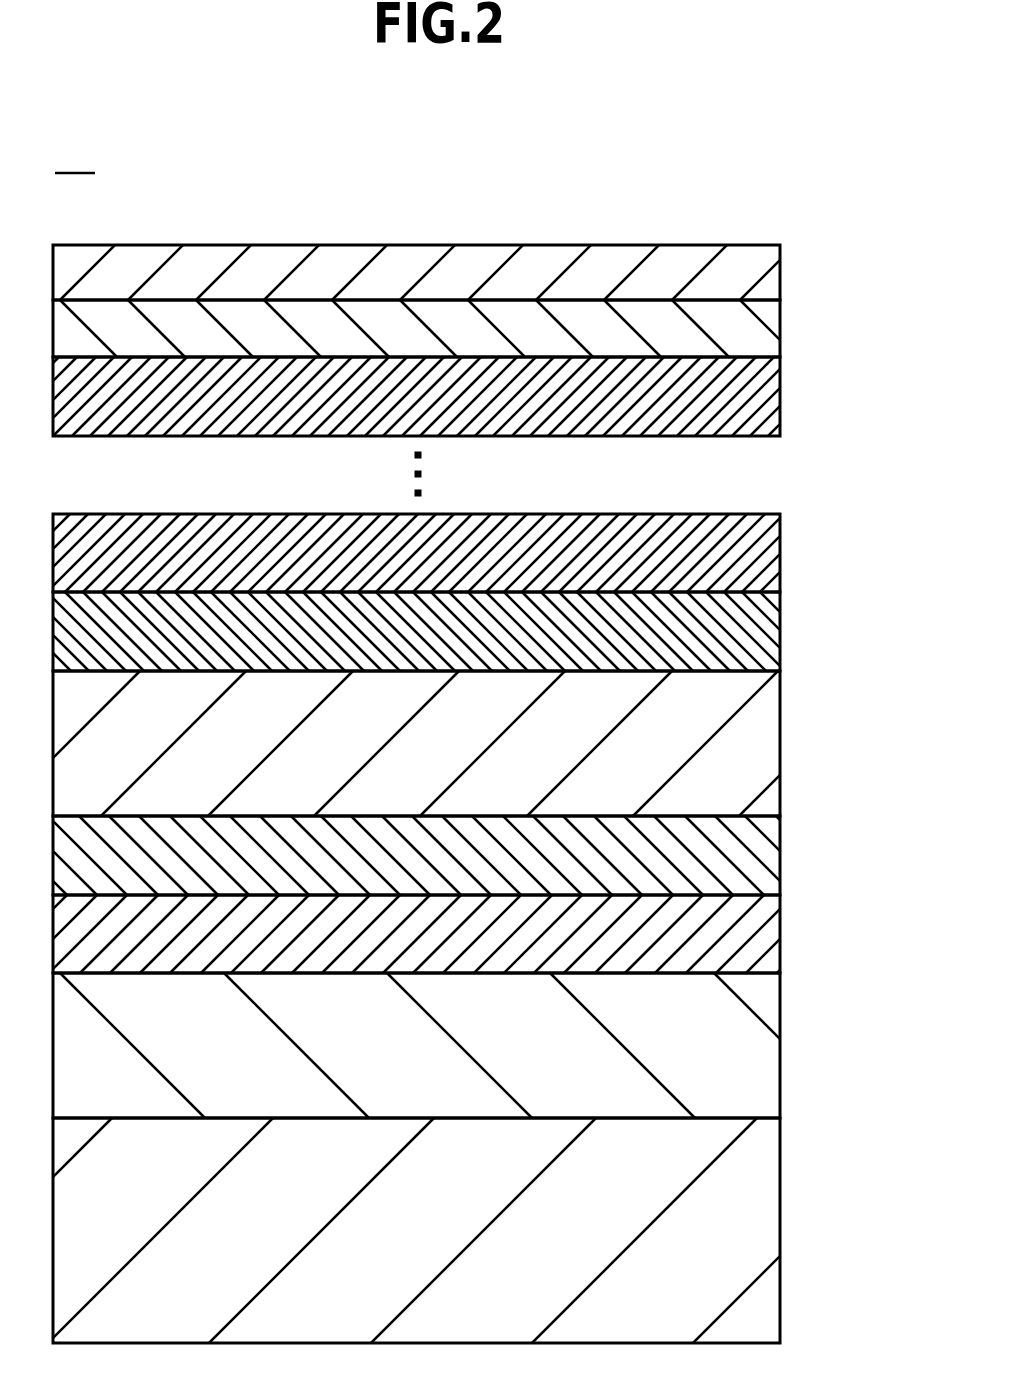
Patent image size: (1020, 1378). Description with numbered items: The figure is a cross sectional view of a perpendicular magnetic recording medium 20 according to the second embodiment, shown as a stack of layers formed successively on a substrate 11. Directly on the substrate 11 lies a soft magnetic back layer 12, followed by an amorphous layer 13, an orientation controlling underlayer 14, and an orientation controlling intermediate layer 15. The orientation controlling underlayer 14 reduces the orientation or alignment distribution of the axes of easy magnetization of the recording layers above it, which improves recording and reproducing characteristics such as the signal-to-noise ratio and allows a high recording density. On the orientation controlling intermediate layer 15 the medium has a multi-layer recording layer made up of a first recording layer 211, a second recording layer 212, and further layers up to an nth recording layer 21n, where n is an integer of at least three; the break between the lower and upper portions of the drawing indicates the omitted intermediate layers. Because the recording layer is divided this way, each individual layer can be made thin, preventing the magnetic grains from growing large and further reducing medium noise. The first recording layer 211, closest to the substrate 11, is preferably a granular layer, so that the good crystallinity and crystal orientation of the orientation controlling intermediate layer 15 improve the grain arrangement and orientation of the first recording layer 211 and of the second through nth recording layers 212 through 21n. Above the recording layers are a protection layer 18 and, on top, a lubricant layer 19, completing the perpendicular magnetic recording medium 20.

The perpendicular magnetic recording medium 20 is at (75, 155).
The lubricant layer 19 is at (780, 272).
The protection layer 18 is at (780, 327).
The nth recording layer 21n is at (780, 394).
The second recording layer 212 is at (780, 553).
The first recording layer 211 is at (780, 632).
The orientation controlling intermediate layer 15 is at (780, 743).
The orientation controlling underlayer 14 is at (780, 855).
The amorphous layer 13 is at (780, 932).
The soft magnetic back layer 12 is at (780, 1040).
The substrate 11 is at (780, 1222).